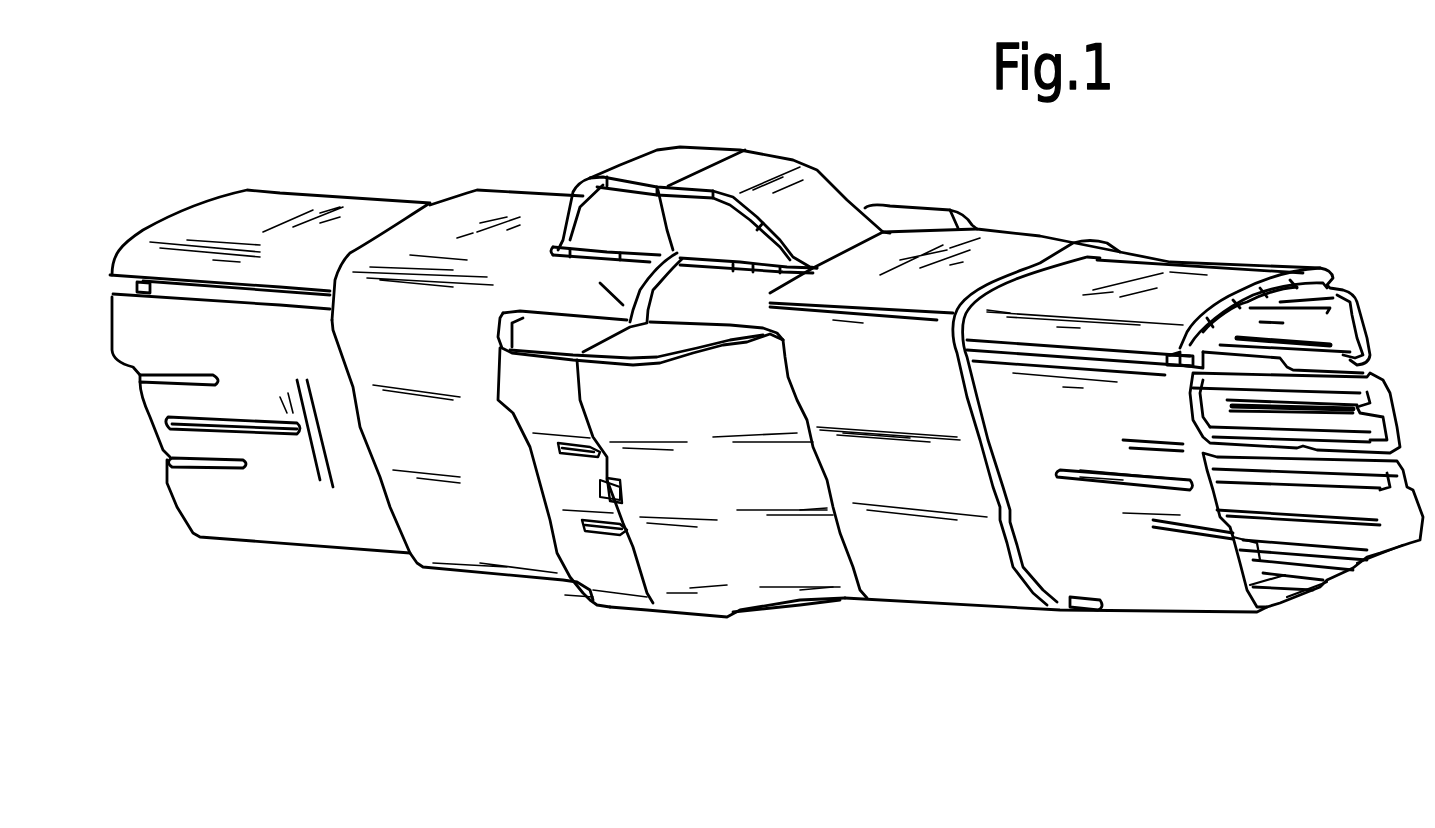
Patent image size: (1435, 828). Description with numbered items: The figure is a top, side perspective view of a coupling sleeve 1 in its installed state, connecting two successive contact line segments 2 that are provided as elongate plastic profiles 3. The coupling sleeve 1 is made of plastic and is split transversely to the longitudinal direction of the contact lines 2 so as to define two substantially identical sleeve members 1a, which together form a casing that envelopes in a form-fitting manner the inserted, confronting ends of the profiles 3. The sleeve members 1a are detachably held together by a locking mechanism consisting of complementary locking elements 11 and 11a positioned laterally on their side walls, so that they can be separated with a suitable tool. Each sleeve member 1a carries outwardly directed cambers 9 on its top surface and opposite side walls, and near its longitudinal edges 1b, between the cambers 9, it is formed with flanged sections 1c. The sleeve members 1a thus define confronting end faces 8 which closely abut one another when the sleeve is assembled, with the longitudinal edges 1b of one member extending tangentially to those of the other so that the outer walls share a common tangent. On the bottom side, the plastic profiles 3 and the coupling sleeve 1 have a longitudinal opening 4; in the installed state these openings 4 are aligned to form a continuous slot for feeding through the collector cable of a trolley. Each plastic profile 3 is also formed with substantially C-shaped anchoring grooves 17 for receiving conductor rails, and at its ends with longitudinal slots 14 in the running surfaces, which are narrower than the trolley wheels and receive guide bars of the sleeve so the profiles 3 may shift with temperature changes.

The coupling sleeve 1 is at (728, 130).
The sleeve member 1a is at (508, 215).
The longitudinal edge 1b is at (685, 158).
The flanged section 1c is at (600, 283).
The contact line segment 2 is at (275, 166).
The elongate plastic profile 3 is at (290, 527).
The longitudinal opening 4 is at (1333, 577).
The end face 8 is at (650, 605).
The camber 9 is at (587, 587).
The locking element 11 is at (575, 457).
The complementary locking element 11a is at (623, 487).
The slot 14 is at (1310, 594).
The anchoring groove 17 is at (1257, 597).